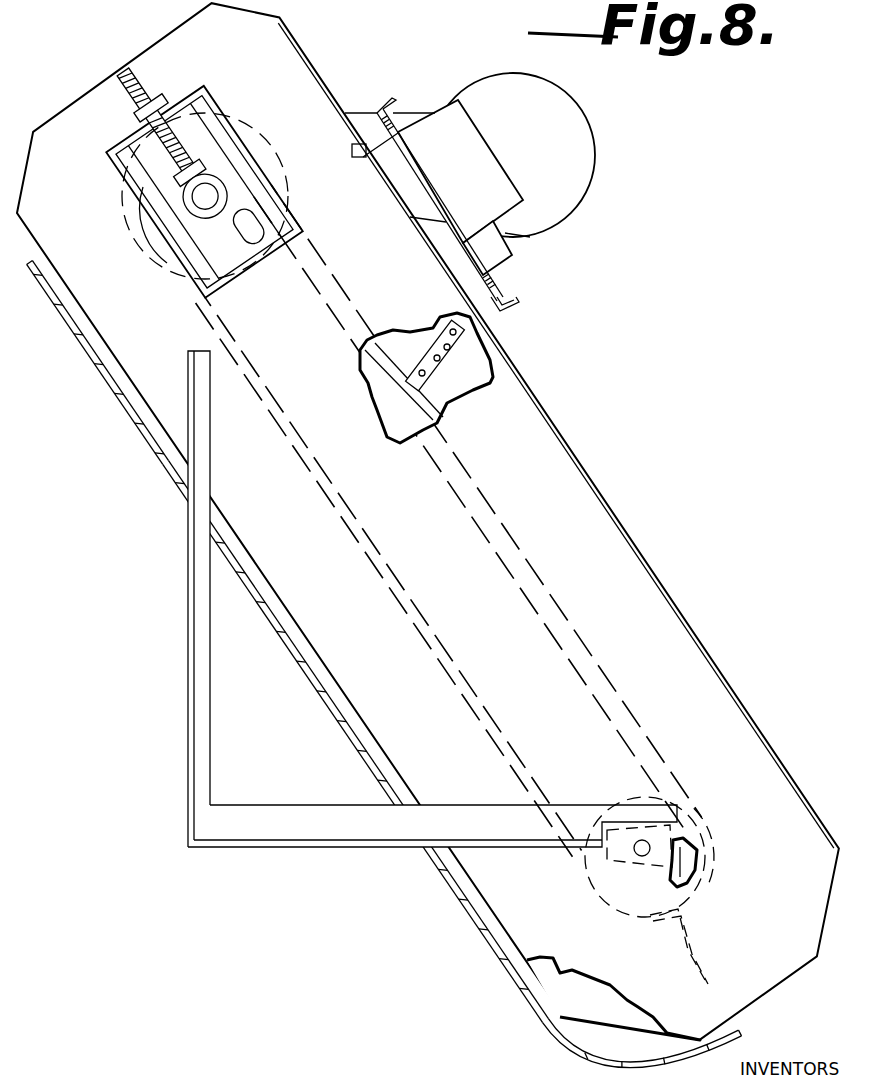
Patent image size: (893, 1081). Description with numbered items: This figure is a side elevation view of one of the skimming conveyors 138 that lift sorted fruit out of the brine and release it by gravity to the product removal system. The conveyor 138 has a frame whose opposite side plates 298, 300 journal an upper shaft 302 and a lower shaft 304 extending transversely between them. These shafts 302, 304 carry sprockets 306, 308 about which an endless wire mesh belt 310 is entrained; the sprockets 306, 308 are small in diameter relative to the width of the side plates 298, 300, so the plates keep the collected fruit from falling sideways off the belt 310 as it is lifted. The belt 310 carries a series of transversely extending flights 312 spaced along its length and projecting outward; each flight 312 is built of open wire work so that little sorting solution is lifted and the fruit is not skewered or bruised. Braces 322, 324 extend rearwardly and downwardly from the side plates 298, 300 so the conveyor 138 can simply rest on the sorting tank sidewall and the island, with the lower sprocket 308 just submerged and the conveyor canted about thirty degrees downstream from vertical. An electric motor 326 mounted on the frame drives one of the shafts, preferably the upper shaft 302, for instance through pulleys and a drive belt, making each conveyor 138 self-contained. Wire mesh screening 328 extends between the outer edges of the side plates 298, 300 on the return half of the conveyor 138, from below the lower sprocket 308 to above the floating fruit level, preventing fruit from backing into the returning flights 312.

The skimming conveyor 138 is at (117, 418).
The side plate 298 is at (557, 993).
The side plate 300 is at (516, 931).
The upper shaft 302 is at (198, 205).
The lower shaft 304 is at (640, 856).
The sprocket 306 is at (250, 141).
The sprocket 308 is at (657, 797).
The endless wire mesh belt 310 is at (472, 465).
The flight 312 is at (460, 347).
The horizontal brace 322 is at (292, 848).
The brace 324 is at (188, 685).
The electric motor 326 is at (585, 166).
The wire mesh screening 328 is at (350, 746).